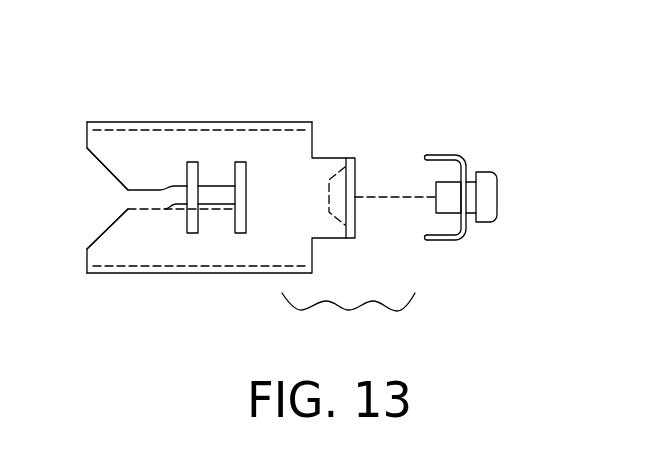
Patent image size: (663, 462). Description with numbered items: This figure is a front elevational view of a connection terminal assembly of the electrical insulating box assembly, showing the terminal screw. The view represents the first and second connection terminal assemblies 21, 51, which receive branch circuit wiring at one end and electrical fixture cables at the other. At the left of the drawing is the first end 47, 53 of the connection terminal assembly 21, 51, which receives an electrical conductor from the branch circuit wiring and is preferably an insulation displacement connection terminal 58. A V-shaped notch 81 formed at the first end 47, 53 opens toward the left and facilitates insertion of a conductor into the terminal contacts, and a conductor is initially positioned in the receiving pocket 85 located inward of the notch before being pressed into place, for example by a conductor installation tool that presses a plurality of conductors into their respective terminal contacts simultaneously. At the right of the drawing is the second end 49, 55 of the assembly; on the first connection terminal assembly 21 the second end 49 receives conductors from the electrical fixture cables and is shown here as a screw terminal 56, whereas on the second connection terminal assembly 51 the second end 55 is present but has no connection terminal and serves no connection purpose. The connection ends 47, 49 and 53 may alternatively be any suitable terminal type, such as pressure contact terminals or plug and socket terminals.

The first connection terminal assembly 21 is at (217, 154).
The second connection terminal assembly 51 is at (241, 110).
The first end 47 is at (199, 97).
The first end 53 is at (103, 122).
The V-shaped notch 81 is at (100, 163).
The insulation displacement connection terminal 58 is at (106, 206).
The receiving pocket 85 is at (163, 209).
The second end 49 is at (372, 168).
The second end 55 is at (333, 158).
The screw terminal 56 is at (448, 254).